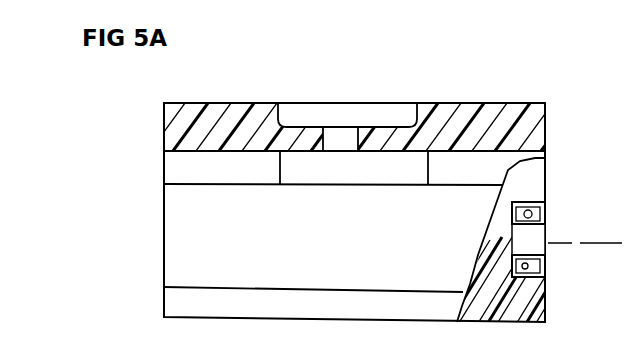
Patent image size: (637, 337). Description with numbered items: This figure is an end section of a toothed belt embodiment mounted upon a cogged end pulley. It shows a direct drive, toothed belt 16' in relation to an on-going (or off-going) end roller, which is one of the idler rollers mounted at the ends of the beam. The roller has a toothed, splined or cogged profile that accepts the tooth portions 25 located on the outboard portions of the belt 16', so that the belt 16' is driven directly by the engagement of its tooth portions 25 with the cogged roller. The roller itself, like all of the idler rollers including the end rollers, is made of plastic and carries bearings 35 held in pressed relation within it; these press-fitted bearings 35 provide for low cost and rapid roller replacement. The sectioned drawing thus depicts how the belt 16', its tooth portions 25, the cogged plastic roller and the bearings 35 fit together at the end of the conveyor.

The toothed belt 16' is at (299, 127).
The tooth portions 25 is at (197, 171).
The bearings 35 is at (547, 216).